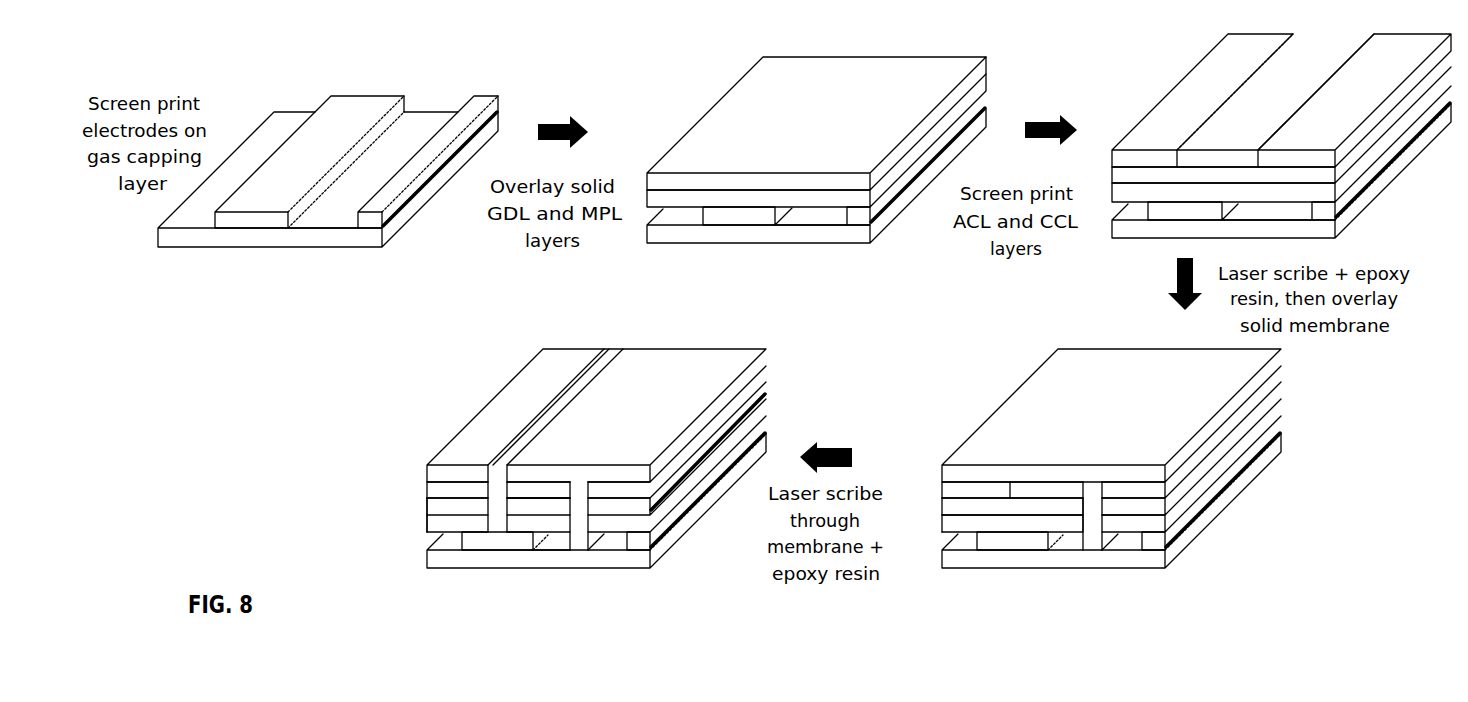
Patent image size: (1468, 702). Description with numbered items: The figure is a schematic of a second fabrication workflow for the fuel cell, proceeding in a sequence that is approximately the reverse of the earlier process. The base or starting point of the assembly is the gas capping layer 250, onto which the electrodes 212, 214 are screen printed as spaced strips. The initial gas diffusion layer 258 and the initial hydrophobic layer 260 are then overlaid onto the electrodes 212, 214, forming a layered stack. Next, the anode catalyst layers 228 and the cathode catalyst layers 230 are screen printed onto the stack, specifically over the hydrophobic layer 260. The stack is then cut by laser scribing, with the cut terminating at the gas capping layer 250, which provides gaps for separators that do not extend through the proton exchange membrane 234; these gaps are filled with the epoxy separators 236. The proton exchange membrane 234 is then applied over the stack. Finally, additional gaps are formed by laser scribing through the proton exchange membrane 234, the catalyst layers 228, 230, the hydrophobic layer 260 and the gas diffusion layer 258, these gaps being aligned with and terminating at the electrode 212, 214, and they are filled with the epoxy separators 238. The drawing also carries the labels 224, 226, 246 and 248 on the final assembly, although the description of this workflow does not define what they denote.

The electrode 212 is at (222, 228).
The electrode 214 is at (275, 227).
The anode side layer edge 224 is at (425, 527).
The epoxy resin fill 226 is at (552, 550).
The anode catalyst layer 228 is at (1397, 62).
The cathode catalyst layer 230 is at (1290, 68).
The proton exchange membrane 234 is at (1040, 400).
The epoxy separator 236 is at (1092, 550).
The epoxy separator 238 is at (572, 393).
The gas diffusion layer edge 246 is at (428, 510).
The epoxy resin 248 is at (562, 502).
The gas capping layer 250 is at (170, 248).
The gas diffusion layer 258 is at (647, 205).
The hydrophobic layer 260 is at (703, 153).